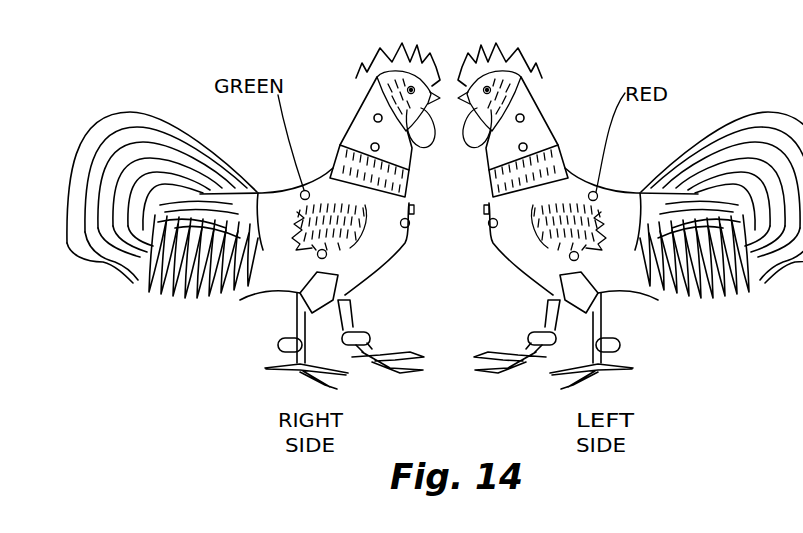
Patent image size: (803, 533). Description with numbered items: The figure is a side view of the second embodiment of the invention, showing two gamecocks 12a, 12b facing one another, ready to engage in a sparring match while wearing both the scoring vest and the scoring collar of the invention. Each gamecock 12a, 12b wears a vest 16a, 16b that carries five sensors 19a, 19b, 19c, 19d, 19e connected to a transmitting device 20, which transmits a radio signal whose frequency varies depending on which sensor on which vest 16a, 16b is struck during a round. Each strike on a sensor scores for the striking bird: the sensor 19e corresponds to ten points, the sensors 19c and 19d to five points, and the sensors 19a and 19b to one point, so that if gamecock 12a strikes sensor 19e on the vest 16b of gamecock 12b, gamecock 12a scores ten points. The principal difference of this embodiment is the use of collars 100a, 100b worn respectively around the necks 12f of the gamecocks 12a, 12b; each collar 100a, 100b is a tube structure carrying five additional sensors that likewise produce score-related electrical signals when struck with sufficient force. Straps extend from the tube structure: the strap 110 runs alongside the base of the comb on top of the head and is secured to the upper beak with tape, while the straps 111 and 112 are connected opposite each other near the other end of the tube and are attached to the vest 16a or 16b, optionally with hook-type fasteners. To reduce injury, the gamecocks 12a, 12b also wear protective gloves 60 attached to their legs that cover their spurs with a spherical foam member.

The collar 100a is at (340, 90).
The collar 100b is at (558, 90).
The strap 110 is at (495, 64).
The strap 112 is at (447, 137).
The gamecock 12a is at (266, 188).
The gamecock 12b is at (654, 192).
The neck 12f is at (331, 177).
The strap 111 is at (331, 178).
The sensor 19a is at (300, 191).
The sensor 19b is at (628, 196).
The sensor 19c is at (328, 255).
The sensor 19d is at (568, 258).
The sensor 19e is at (409, 228).
The transmitting device 20 is at (480, 209).
The vest 16a is at (270, 296).
The vest 16b is at (622, 284).
The protective glove 60 is at (330, 339).